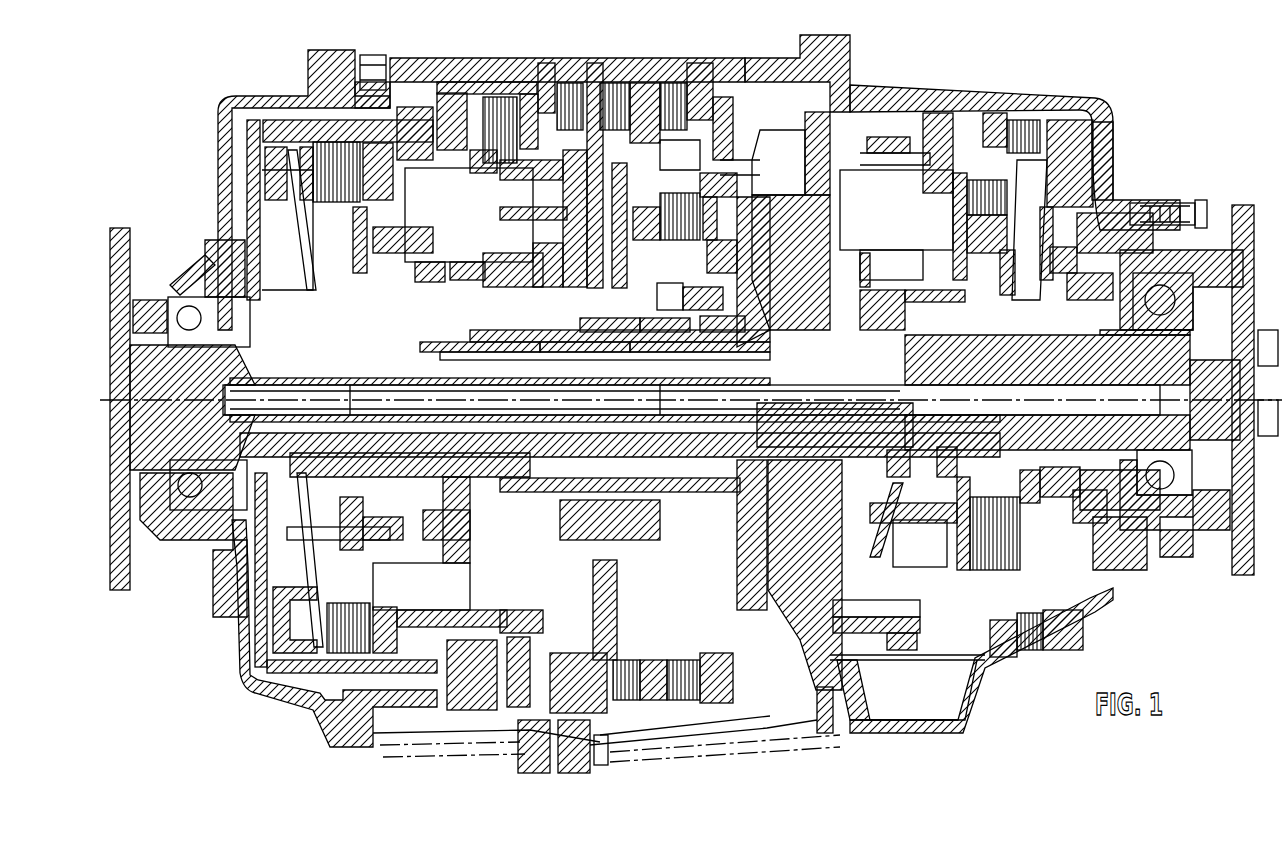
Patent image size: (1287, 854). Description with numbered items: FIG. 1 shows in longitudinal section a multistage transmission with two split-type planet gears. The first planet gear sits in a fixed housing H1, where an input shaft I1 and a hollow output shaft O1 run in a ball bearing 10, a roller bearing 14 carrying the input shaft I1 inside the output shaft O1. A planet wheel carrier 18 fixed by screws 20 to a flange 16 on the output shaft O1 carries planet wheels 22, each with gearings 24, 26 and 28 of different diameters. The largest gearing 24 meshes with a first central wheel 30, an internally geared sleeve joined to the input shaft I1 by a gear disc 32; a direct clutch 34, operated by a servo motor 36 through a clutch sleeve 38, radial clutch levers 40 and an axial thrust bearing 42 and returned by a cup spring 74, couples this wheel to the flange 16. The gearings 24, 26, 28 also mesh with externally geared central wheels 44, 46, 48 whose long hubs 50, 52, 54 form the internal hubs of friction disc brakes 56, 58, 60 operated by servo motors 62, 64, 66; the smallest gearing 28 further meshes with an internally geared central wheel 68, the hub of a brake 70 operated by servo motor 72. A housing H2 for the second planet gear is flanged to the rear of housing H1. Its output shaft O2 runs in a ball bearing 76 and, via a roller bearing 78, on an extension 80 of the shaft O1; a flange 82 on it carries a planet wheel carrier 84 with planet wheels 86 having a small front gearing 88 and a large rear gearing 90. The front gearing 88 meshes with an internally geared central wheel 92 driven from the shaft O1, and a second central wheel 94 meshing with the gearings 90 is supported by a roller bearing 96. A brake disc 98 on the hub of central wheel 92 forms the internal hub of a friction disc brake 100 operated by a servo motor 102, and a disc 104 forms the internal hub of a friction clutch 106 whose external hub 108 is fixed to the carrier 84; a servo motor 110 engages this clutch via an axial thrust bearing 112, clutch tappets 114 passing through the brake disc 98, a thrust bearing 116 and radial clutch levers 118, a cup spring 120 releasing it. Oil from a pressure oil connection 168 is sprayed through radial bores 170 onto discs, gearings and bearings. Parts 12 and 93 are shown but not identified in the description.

The ball bearing 10 is at (158, 300).
The main shaft 12 is at (775, 360).
The roller bearing 14 is at (440, 440).
The flange 16 is at (370, 586).
The planet wheel carrier 18 is at (430, 610).
The screws 20 is at (385, 555).
The planet wheels 22 is at (364, 228).
The largest gearing 24 is at (400, 120).
The middle gearing 26 is at (428, 125).
The smallest gearing 28 is at (480, 222).
The first central wheel 30 is at (224, 104).
The gear disc 32 is at (246, 180).
The direct clutch 34 is at (330, 142).
The servo motor 36 is at (706, 352).
The clutch sleeve 38 is at (620, 352).
The radial clutch levers 40 is at (310, 250).
The axial thrust bearing 42 is at (672, 352).
The central wheel 44 is at (428, 262).
The central wheel 46 is at (465, 262).
The central wheel 48 is at (563, 218).
The hub 50 is at (460, 352).
The hub 52 is at (492, 352).
The hub 54 is at (548, 352).
The friction disc brake 56 is at (665, 185).
The friction disc brake 58 is at (673, 83).
The friction disc brake 60 is at (640, 83).
The servo motor 62 is at (752, 195).
The servo motor 64 is at (725, 97).
The servo motor 66 is at (570, 83).
The internally geared central wheel 68 is at (530, 94).
The friction disc brake 70 is at (500, 97).
The servo motor 72 is at (452, 93).
The cup spring 74 is at (265, 165).
The ball bearing 76 is at (1190, 500).
The roller bearing 78 is at (912, 462).
The extension 80 is at (940, 462).
The flange 82 is at (876, 485).
The planet wheel carrier 84 is at (915, 522).
The planet wheels 86 is at (815, 165).
The front gearing 88 is at (891, 250).
The rear gearing 90 is at (935, 113).
The internally geared central wheel 92 is at (872, 137).
The carrier 93 is at (830, 175).
The second central wheel 94 is at (925, 300).
The roller bearing 96 is at (1068, 540).
The brake disc 98 is at (1053, 215).
The friction disc brake 100 is at (1020, 120).
The servo motor 102 is at (1085, 105).
The disc 104 is at (1006, 270).
The friction clutch 106 is at (967, 200).
The external hub 108 is at (960, 173).
The servo motor 110 is at (1085, 240).
The axial thrust bearing 112 is at (1094, 270).
The clutch tappets 114 is at (1185, 225).
The axial thrust bearing 116 is at (1032, 240).
The radial clutch levers 118 is at (967, 235).
The cup spring 120 is at (1100, 150).
The pressure oil connection 168 is at (193, 262).
The radial bores 170 is at (582, 352).
The input shaft I1 is at (152, 485).
The output shaft O1 is at (765, 408).
The output shaft O2 is at (1180, 520).
The transmission housing H1 is at (232, 672).
The housing H2 is at (972, 697).